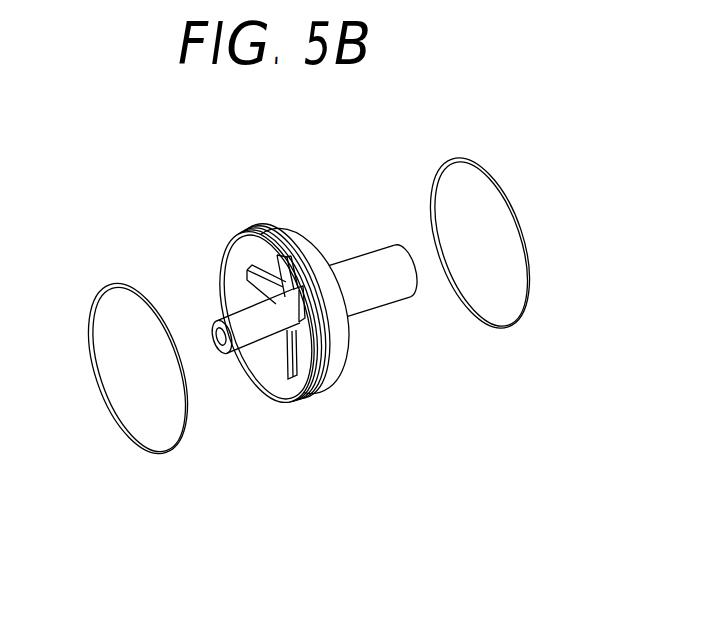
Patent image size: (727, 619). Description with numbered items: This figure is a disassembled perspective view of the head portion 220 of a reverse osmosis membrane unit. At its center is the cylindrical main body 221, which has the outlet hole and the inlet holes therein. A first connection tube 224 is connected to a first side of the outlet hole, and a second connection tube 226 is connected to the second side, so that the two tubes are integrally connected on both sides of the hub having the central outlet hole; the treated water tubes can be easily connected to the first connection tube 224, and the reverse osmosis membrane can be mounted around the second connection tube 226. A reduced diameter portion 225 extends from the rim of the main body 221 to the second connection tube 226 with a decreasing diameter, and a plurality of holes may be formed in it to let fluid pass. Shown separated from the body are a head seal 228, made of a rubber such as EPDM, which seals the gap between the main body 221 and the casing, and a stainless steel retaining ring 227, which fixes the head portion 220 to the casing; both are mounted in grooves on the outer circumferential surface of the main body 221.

The head portion 220 is at (247, 209).
The main body 221 is at (325, 391).
The first connection tube 224 is at (245, 323).
The reduced diameter portion 225 is at (352, 360).
The second connection tube 226 is at (376, 292).
The retaining ring 227 is at (106, 284).
The head seal 228 is at (450, 158).